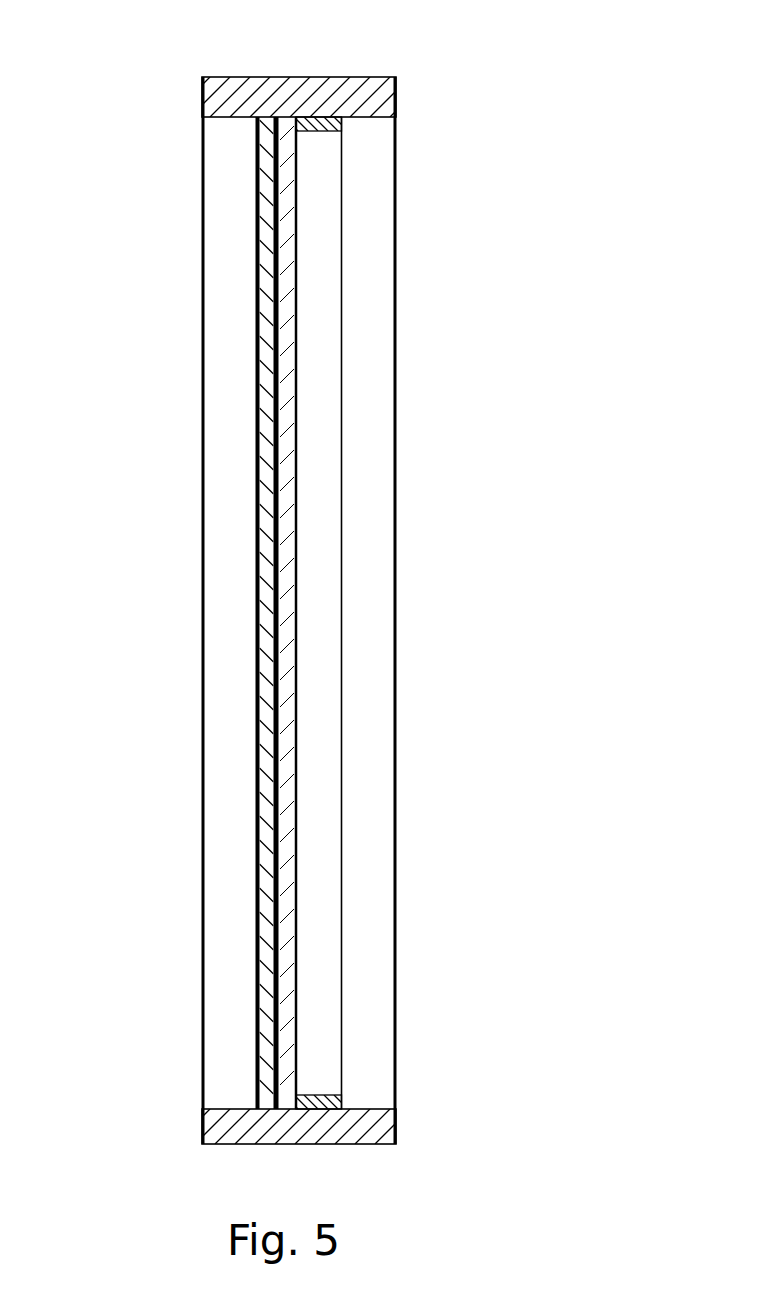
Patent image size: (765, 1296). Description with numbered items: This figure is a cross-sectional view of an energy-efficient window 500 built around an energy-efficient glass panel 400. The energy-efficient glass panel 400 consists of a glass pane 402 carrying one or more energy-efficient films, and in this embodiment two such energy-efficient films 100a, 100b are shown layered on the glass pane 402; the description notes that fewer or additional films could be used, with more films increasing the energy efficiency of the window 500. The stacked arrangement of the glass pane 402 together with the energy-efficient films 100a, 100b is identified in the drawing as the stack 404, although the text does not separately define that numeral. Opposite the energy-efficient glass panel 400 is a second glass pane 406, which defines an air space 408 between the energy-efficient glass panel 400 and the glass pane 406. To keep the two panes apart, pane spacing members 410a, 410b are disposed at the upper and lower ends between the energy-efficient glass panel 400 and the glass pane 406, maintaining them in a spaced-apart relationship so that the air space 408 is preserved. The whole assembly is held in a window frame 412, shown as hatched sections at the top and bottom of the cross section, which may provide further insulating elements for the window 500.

The window 500 is at (307, 597).
The energy-efficient glass panel 400 is at (263, 603).
The glass pane 402 is at (220, 203).
The electrode stack 404 is at (215, 650).
The glass pane 406 is at (375, 274).
The air space 408 is at (320, 213).
The pane spacing member 410a is at (322, 125).
The pane spacing member 410b is at (326, 1097).
The window frame 412 is at (238, 97).
The energy-efficient film 100a is at (262, 1055).
The energy-efficient film 100b is at (276, 1078).